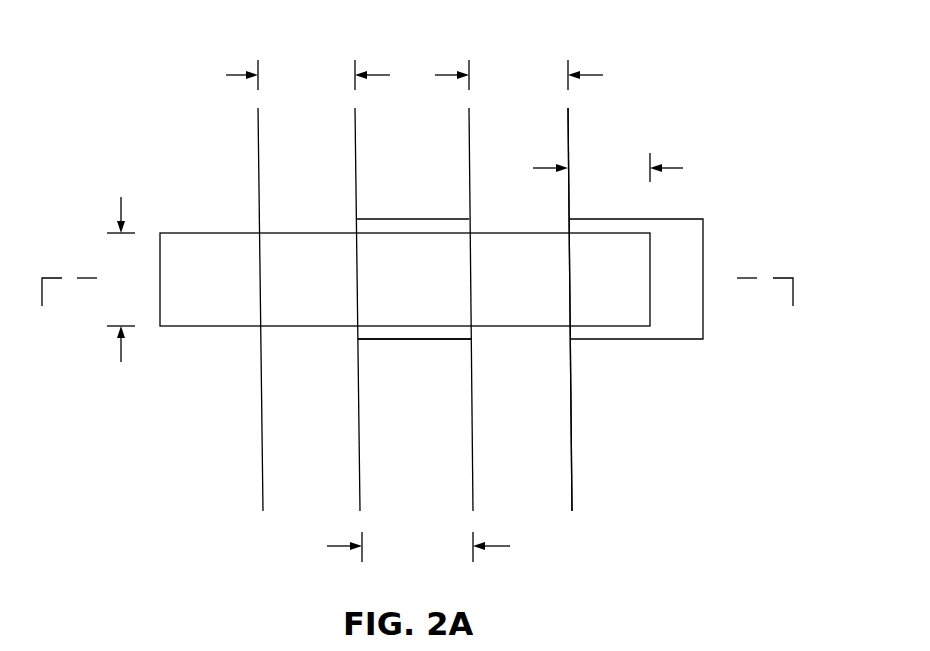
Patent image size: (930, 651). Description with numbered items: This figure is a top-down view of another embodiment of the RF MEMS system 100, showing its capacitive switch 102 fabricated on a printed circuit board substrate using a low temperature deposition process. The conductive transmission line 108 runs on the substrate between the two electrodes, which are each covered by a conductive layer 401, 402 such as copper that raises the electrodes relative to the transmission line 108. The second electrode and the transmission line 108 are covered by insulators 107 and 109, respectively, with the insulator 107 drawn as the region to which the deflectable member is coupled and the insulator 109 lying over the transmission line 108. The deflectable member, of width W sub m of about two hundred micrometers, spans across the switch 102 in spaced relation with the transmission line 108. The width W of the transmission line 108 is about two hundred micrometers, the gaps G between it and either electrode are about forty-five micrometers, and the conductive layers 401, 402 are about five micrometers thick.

The RF MEMS system 100 is at (420, 303).
The capacitive switch 102 is at (664, 408).
The first insulator 107 is at (693, 290).
The conductive line 108 is at (432, 456).
The second insulator 109 is at (463, 333).
The conductive layer 401 is at (232, 456).
The conductive layer 402 is at (630, 456).